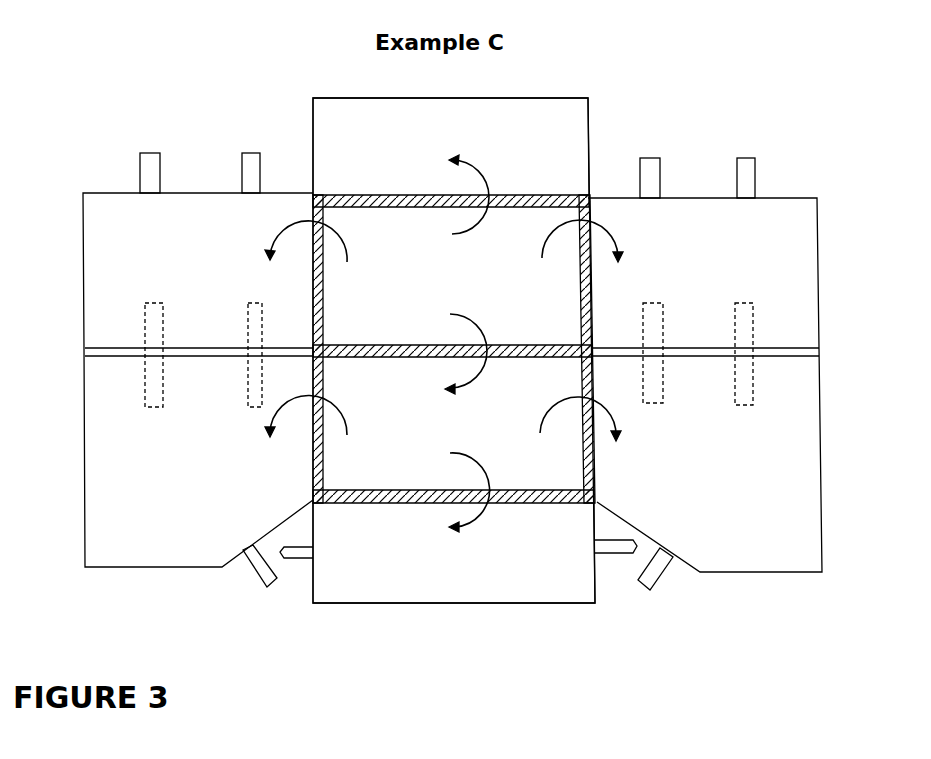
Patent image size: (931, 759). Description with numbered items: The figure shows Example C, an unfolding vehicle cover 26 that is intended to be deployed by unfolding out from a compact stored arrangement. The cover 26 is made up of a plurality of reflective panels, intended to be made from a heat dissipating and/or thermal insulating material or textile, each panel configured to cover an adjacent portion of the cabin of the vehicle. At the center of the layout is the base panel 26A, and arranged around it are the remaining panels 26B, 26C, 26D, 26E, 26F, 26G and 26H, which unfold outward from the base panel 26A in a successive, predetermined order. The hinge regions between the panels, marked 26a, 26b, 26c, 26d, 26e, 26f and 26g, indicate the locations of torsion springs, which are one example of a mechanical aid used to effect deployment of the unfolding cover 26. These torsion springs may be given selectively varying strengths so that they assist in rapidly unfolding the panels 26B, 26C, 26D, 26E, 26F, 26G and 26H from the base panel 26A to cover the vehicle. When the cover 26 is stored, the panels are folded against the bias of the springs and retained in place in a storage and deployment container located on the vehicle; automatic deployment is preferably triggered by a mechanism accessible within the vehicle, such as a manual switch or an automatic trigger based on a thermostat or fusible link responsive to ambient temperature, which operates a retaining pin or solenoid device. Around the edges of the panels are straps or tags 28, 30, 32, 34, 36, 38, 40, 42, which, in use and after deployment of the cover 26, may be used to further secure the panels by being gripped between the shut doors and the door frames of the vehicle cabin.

The Example C cover 26 is at (454, 316).
The base panel 26A is at (454, 349).
The panel 26B is at (451, 146).
The panel 26C is at (198, 270).
The panel 26D is at (703, 273).
The panel 26E is at (198, 457).
The panel 26F is at (453, 424).
The panel 26G is at (707, 460).
The panel 26H is at (454, 553).
The torsion spring location 26a is at (513, 204).
The torsion spring location 26b is at (311, 287).
The torsion spring location 26c is at (590, 307).
The torsion spring location 26d is at (406, 351).
The torsion spring location 26e is at (315, 440).
The torsion spring location 26f is at (580, 389).
The torsion spring location 26g is at (512, 498).
The strap or tag 28 is at (243, 148).
The strap or tag 30 is at (743, 148).
The strap or tag 32 is at (248, 575).
The strap or tag 34 is at (615, 560).
The strap or tag 36 is at (762, 387).
The strap or tag 38 is at (668, 373).
The strap or tag 40 is at (130, 390).
The strap or tag 42 is at (242, 387).